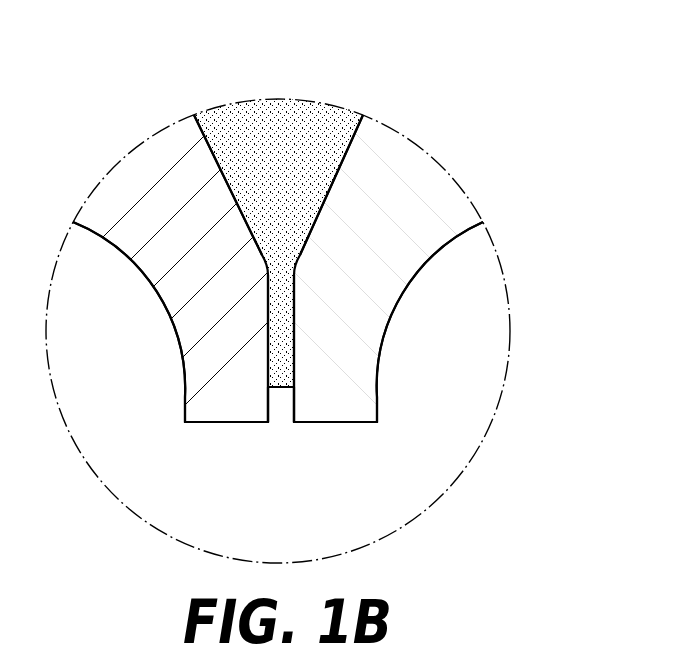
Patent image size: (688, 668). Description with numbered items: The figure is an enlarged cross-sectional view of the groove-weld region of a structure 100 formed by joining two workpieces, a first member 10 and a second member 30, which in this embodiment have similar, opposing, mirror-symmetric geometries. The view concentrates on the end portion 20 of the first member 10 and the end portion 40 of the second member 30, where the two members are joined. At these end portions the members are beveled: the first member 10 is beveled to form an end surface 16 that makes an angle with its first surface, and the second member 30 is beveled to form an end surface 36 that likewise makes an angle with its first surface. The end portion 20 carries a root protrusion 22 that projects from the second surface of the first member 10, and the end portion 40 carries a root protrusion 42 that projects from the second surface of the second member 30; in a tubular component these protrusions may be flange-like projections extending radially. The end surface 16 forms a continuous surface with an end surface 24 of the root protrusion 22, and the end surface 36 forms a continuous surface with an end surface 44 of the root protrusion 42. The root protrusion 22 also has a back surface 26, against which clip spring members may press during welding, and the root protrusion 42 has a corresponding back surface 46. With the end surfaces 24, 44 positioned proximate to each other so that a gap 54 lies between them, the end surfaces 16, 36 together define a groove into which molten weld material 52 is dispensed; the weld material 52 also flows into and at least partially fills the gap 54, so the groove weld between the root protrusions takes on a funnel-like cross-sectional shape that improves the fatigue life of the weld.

The structure 100 is at (503, 148).
The first structural member 10 is at (161, 197).
The second structural member 30 is at (421, 201).
The end portion 20 is at (146, 322).
The end portion 40 is at (414, 328).
The end surface 16 is at (215, 150).
The end surface 36 is at (347, 147).
The molten weld material 52 is at (290, 128).
The root protrusion 22 is at (236, 401).
The root protrusion 42 is at (348, 401).
The back surface 26 is at (185, 397).
The second lower side wall 46 is at (378, 397).
The end surface 24 is at (268, 422).
The end surface 44 is at (294, 422).
The gap 54 is at (283, 449).